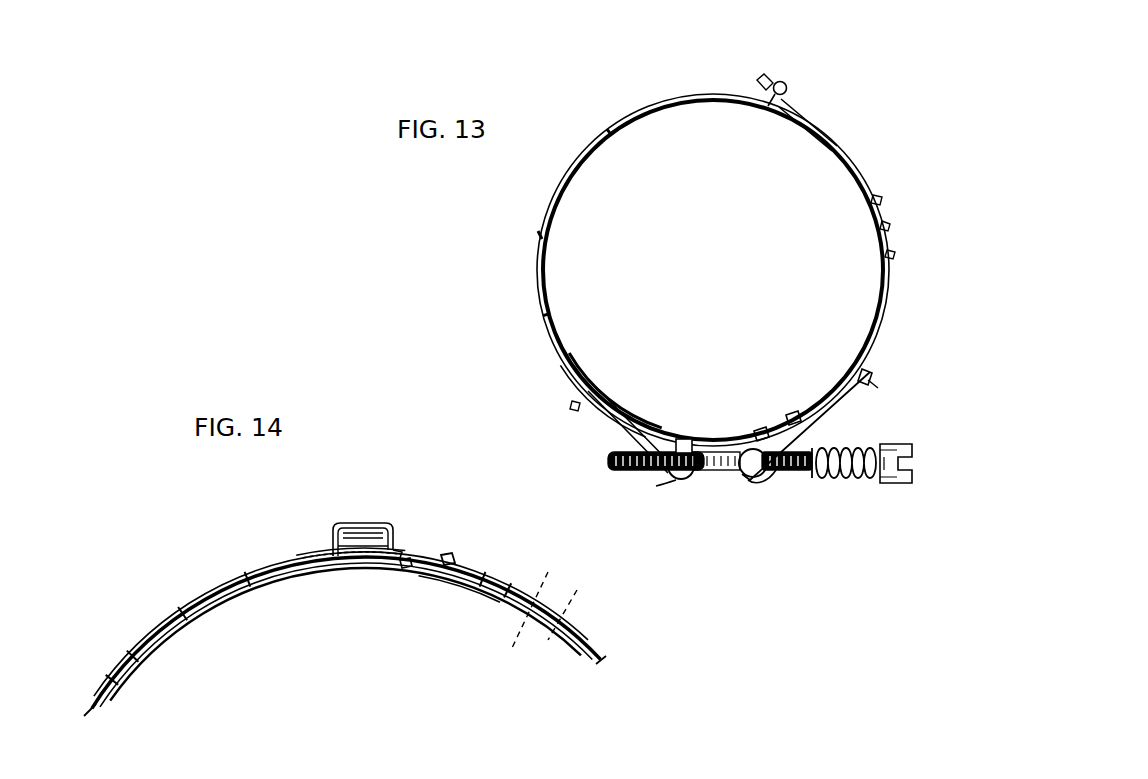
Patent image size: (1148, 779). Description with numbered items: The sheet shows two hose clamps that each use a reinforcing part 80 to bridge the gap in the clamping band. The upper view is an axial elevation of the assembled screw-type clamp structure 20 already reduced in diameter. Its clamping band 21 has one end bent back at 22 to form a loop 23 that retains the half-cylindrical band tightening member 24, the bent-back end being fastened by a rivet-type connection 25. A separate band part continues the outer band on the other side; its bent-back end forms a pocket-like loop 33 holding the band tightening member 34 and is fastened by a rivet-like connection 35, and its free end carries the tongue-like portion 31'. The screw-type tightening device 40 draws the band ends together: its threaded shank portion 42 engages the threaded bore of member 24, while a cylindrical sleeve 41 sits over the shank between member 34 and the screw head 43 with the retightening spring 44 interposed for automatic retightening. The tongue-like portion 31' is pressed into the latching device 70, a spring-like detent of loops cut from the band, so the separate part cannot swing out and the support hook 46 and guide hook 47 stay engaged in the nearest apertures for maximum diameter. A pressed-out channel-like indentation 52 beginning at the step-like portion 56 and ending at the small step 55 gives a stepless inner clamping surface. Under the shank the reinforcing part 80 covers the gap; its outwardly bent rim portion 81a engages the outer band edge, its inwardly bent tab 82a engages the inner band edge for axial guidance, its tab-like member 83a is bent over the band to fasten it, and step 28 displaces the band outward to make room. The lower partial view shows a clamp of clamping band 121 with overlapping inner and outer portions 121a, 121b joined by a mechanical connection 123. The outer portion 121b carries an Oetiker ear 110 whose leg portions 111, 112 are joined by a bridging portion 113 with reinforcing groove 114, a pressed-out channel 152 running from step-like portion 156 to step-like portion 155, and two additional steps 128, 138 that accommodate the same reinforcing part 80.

In FIG. 13, the screw-type clamp structure 20 is at (553, 128).
In FIG. 13, the clamping band 21 is at (718, 104).
In FIG. 13, the bent-back outer clamping band end portion 22 is at (664, 474).
In FIG. 13, the loop 23 is at (686, 480).
In FIG. 13, the half-cylindrical band tightening member 24 is at (672, 484).
In FIG. 13, the rivet-type connection 25 is at (577, 410).
In FIG. 13, the step 28 is at (582, 378).
In FIG. 13, the tongue-like portion 31' is at (813, 112).
In FIG. 13, the pocket-like loop 33 is at (762, 478).
In FIG. 13, the half-cylindrical band tightening member 34 is at (752, 478).
In FIG. 13, the rivet-like connection 35 is at (880, 386).
In FIG. 13, the screw-type tightening device 40 is at (771, 470).
In FIG. 13, the cylindrical sleeve 41 is at (800, 472).
In FIG. 13, the threaded shank portion 42 is at (732, 472).
In FIG. 13, the screw head 43 is at (908, 452).
In FIG. 13, the retightening spring 44 is at (858, 480).
In FIG. 13, the support hook 46 is at (894, 256).
In FIG. 13, the guide hook 47 is at (884, 204).
In FIG. 13, the pressed-out channel-like indentation 52 is at (540, 236).
In FIG. 13, the step-like portion 55 is at (609, 130).
In FIG. 13, the step-like portion 56 is at (543, 316).
In FIG. 13, the latching device 70 is at (779, 70).
In FIG. 14, the reinforcing part 80 is at (352, 574).
In FIG. 13, the outwardly bent rim portion 81a is at (688, 440).
In FIG. 13, the inwardly bent tab-like member 82a is at (758, 433).
In FIG. 14, the inwardly bent tab-like member 82a is at (404, 576).
In FIG. 13, the tab-like member 83a is at (794, 416).
In FIG. 14, the tab-like member 83a is at (448, 556).
In FIG. 14, the Oetiker ear 110 is at (364, 508).
In FIG. 14, the leg portion 111 is at (324, 542).
In FIG. 14, the leg portion 112 is at (419, 533).
In FIG. 14, the bridging portion 113 is at (338, 526).
In FIG. 14, the reinforcing groove 114 is at (378, 526).
In FIG. 14, the clamping band 121 is at (96, 708).
In FIG. 14, the inner clamping band portion 121a is at (460, 586).
In FIG. 14, the outer clamping band portion 121b is at (218, 582).
In FIG. 14, the mechanical connection 123 is at (542, 582).
In FIG. 14, the step-like portion 128 is at (486, 570).
In FIG. 14, the step-like portion 138 is at (248, 572).
In FIG. 14, the pressed-out channel 152 is at (130, 652).
In FIG. 14, the step-like portion 155 is at (114, 680).
In FIG. 14, the step-like portion 156 is at (184, 610).